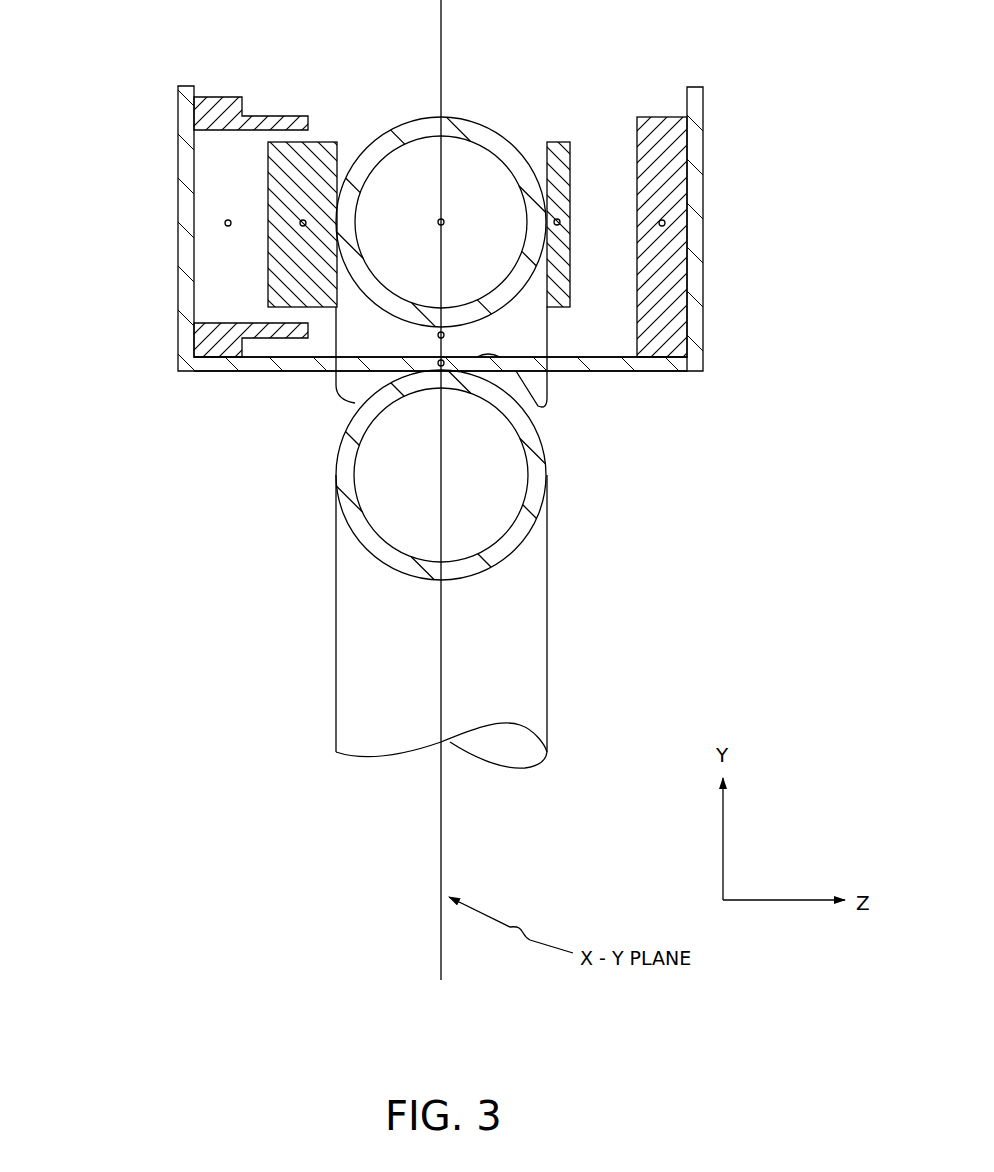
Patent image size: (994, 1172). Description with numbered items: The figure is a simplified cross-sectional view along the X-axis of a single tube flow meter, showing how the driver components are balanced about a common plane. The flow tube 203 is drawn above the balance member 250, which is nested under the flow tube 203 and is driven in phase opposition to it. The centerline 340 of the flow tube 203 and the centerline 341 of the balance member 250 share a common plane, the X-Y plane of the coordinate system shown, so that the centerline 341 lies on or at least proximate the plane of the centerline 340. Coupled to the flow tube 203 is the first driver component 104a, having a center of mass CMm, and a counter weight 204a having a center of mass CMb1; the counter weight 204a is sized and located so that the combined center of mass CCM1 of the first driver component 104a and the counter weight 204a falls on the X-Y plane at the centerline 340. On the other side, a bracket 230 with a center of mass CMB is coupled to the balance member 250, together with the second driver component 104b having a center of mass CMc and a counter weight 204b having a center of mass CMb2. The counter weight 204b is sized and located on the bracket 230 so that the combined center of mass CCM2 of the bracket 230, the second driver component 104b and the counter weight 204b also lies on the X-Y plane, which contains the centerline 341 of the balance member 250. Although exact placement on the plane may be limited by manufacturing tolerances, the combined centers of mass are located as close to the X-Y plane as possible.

The centerline of the flow tube 340 is at (441, 163).
The centerline of the balance member 341 is at (441, 497).
The balance member 250 is at (533, 588).
The bracket 230 is at (706, 168).
The flow tube 203 is at (545, 387).
The first driver component 104a is at (323, 147).
The second driver component 104b is at (235, 104).
The counter weight 204a is at (552, 147).
The counter weight 204b is at (652, 128).
The combined center of mass CCM1 is at (450, 213).
The combined center of mass CCM2 is at (434, 338).
The center of mass of the bracket CMB is at (436, 366).
The center of mass of the second driver component CMc is at (222, 223).
The center of mass of the first driver component CMm is at (297, 227).
The center of mass of the counter weight CMb1 is at (562, 230).
The center of mass of the counter weight CMb2 is at (669, 223).